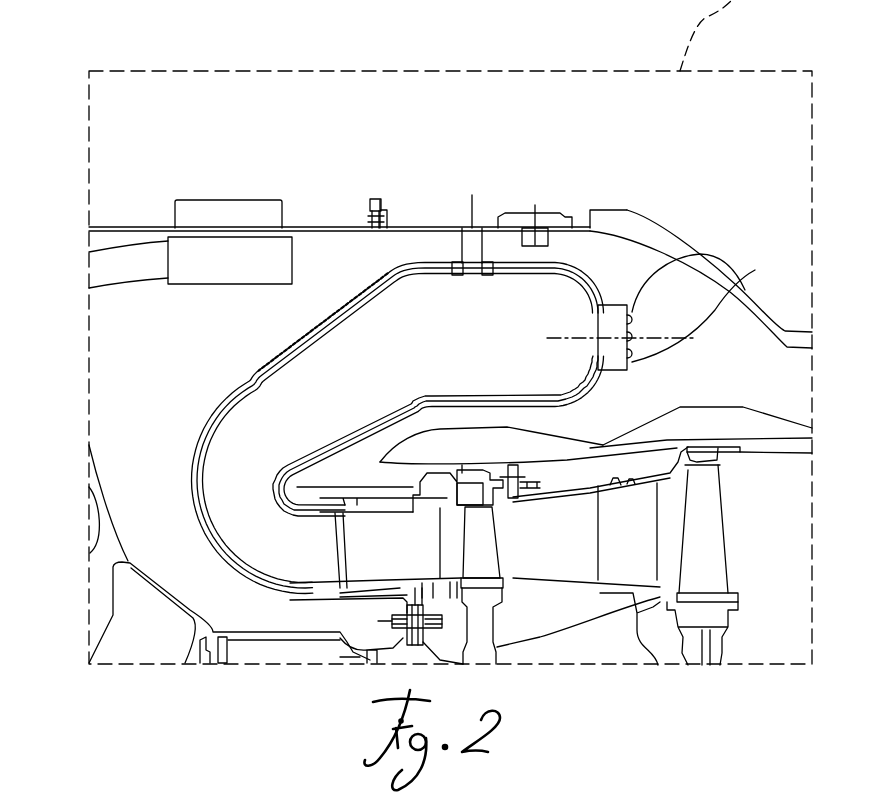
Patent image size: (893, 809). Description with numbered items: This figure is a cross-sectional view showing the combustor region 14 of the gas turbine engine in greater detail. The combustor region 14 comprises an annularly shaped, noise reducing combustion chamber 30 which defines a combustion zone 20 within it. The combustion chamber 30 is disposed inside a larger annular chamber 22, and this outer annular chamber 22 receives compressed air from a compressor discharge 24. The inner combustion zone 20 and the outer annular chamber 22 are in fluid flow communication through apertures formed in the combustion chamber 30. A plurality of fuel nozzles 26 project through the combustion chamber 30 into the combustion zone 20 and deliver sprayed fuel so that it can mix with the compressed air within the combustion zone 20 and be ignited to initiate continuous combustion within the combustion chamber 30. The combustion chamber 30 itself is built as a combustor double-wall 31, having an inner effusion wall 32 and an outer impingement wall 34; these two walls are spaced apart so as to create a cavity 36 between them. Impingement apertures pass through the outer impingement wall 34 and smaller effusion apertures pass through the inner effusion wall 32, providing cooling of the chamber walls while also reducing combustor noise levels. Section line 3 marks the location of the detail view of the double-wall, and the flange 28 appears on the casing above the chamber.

The combustor region 14 is at (465, 160).
The combustion zone 20 is at (616, 318).
The annular chamber 22 is at (153, 397).
The compressor discharge 24 is at (228, 258).
The fuel nozzles 26 is at (627, 308).
The casing flange 28 is at (308, 228).
The combustion chamber 30 is at (506, 246).
The combustor double-wall 31 is at (604, 401).
The inner effusion wall 32 is at (510, 400).
The outer impingement wall 34 is at (351, 286).
The cavity 36 is at (465, 400).
The section line 3- 3 is at (336, 351).